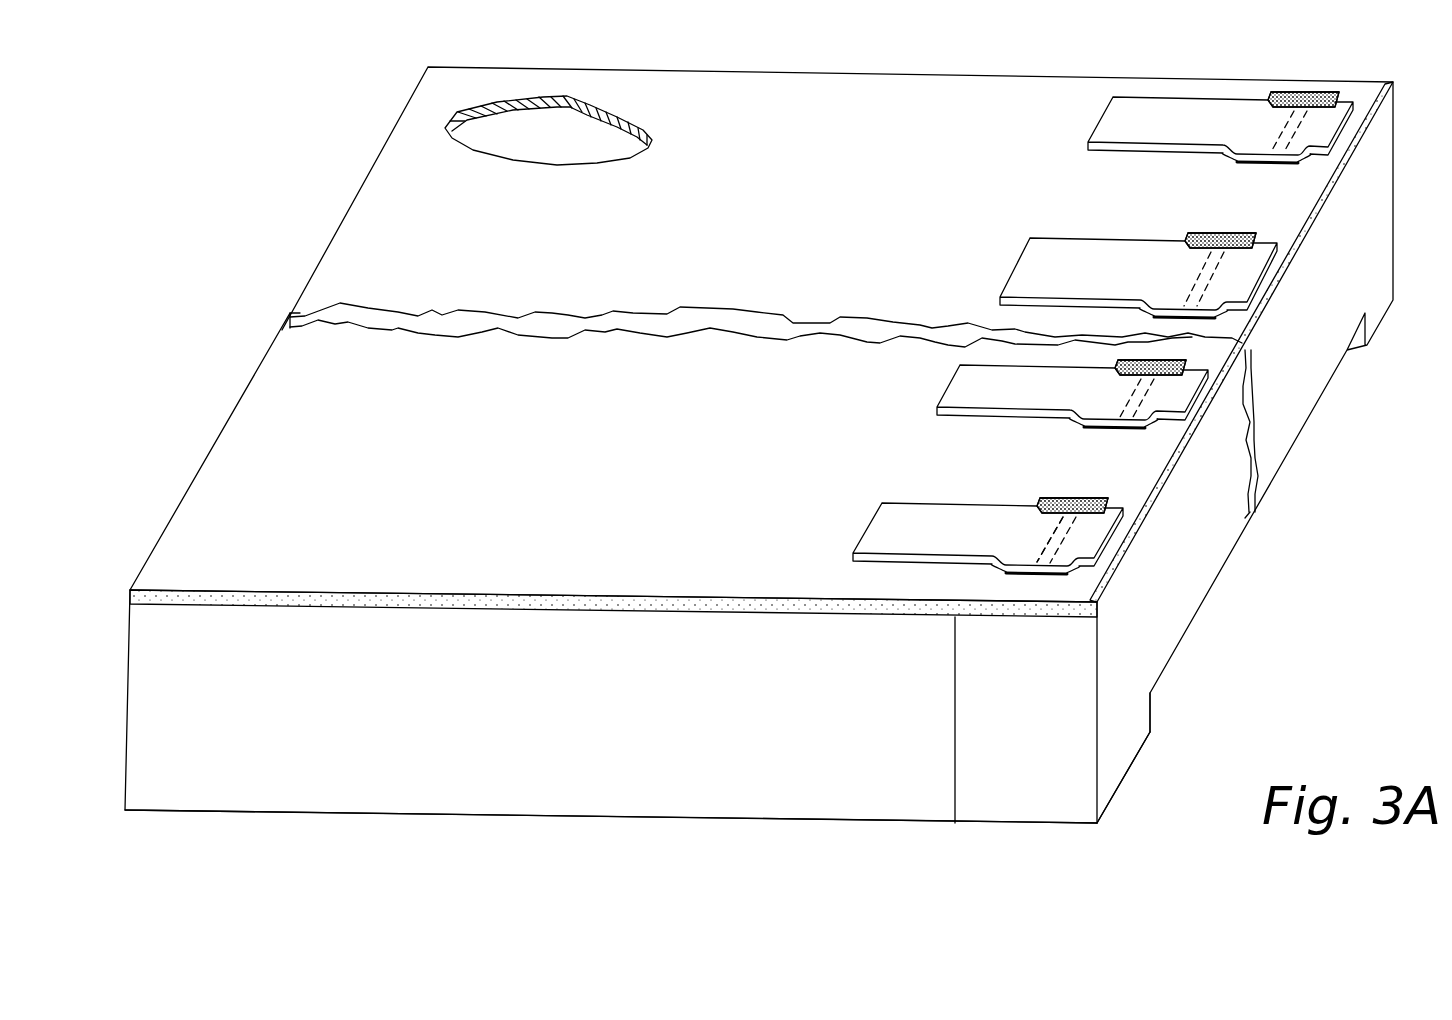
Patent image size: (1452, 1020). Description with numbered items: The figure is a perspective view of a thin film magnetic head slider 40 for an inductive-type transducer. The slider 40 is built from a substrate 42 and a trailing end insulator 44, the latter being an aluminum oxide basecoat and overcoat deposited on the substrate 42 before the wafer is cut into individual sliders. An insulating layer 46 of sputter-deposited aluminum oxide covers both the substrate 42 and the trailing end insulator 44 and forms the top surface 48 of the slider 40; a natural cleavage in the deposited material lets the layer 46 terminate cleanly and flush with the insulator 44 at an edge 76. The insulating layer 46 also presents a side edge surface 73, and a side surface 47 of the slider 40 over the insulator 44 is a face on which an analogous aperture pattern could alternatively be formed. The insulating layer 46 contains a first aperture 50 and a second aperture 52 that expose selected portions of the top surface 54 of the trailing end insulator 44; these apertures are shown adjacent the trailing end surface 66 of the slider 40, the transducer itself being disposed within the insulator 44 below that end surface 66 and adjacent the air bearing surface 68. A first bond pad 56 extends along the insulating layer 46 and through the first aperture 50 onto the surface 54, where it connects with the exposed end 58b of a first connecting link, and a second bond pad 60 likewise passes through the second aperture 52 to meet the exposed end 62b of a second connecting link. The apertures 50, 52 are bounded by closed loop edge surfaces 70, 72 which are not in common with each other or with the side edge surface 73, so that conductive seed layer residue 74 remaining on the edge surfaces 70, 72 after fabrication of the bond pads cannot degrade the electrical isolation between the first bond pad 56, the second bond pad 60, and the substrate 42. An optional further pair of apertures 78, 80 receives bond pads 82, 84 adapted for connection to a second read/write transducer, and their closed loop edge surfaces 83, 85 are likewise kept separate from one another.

The slider 40 is at (885, 50).
The substrate 42 is at (852, 795).
The trailing end insulator 44 is at (1013, 800).
The insulating layer 46 is at (642, 452).
The side surface 47 is at (585, 142).
The top surface 48 is at (735, 76).
The first aperture 50 is at (1046, 496).
The second aperture 52 is at (1121, 358).
The top surface of the trailing end insulator 54 is at (1002, 578).
The first bond pad 56 is at (925, 522).
The end of first link 58b is at (1057, 540).
The second bond pad 60 is at (960, 385).
The end of second link 62b is at (1246, 375).
The end surface 66 is at (1250, 508).
The air bearing surface 68 is at (1166, 670).
The closed loop edge surface 70 is at (1040, 485).
The closed loop edge surface 72 is at (1113, 366).
The side edge surface 73 is at (790, 601).
The seed layer residue 74 is at (1246, 346).
The edge 76 is at (1212, 571).
The aperture 78 is at (1210, 230).
The aperture 80 is at (1282, 92).
The bond pad 82 is at (1052, 253).
The closed loop edge surface 83 is at (1237, 237).
The bond pad 84 is at (1148, 108).
The closed loop edge surface 85 is at (1313, 93).